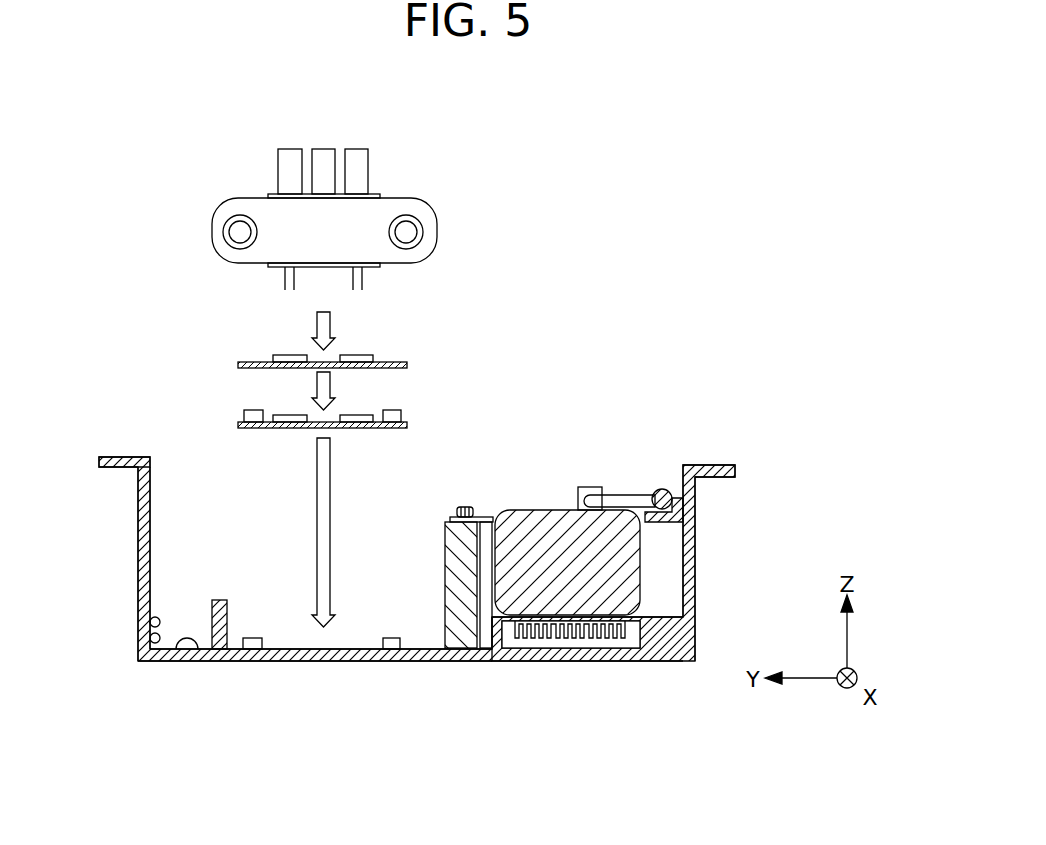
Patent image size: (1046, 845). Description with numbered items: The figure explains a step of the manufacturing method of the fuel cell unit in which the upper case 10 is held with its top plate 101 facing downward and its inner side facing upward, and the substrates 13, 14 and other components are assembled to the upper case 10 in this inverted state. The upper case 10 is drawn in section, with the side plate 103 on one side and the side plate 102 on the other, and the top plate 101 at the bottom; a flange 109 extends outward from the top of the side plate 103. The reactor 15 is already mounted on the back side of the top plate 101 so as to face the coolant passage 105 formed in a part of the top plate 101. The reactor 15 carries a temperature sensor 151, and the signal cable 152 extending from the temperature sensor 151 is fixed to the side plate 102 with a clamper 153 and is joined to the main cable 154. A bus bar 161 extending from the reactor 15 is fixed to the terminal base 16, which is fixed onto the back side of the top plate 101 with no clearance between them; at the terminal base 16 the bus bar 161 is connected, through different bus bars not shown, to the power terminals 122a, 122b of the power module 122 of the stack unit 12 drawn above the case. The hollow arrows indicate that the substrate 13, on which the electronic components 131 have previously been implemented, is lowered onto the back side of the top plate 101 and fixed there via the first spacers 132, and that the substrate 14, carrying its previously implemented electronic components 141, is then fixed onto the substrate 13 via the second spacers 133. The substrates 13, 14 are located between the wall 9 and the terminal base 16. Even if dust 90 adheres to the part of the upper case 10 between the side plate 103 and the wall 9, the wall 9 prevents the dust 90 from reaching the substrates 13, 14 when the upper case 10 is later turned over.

The upper case 10 is at (98, 437).
The stack unit 12 is at (221, 179).
The power module 122 is at (376, 191).
The power terminal 122a is at (362, 148).
The power terminal 122b is at (318, 148).
The substrate 13 is at (240, 426).
The electronic component 131 is at (293, 417).
The first spacer 132 is at (278, 661).
The second spacer 133 is at (244, 415).
The substrate 14 is at (240, 363).
The electronic component 141 is at (292, 355).
The reactor 15 is at (528, 518).
The temperature sensor 151 is at (588, 487).
The signal cable 152 is at (632, 495).
The clamper 153 is at (677, 498).
The main cable 154 is at (663, 489).
The terminal base 16 is at (445, 532).
The bus bar 161 is at (485, 517).
The wall 9 is at (216, 600).
The dust 90 is at (149, 637).
The top plate 101 is at (172, 661).
The side plate 102 is at (690, 563).
The side plate 103 is at (139, 503).
The coolant passage 105 is at (628, 648).
The flange 109 is at (152, 475).